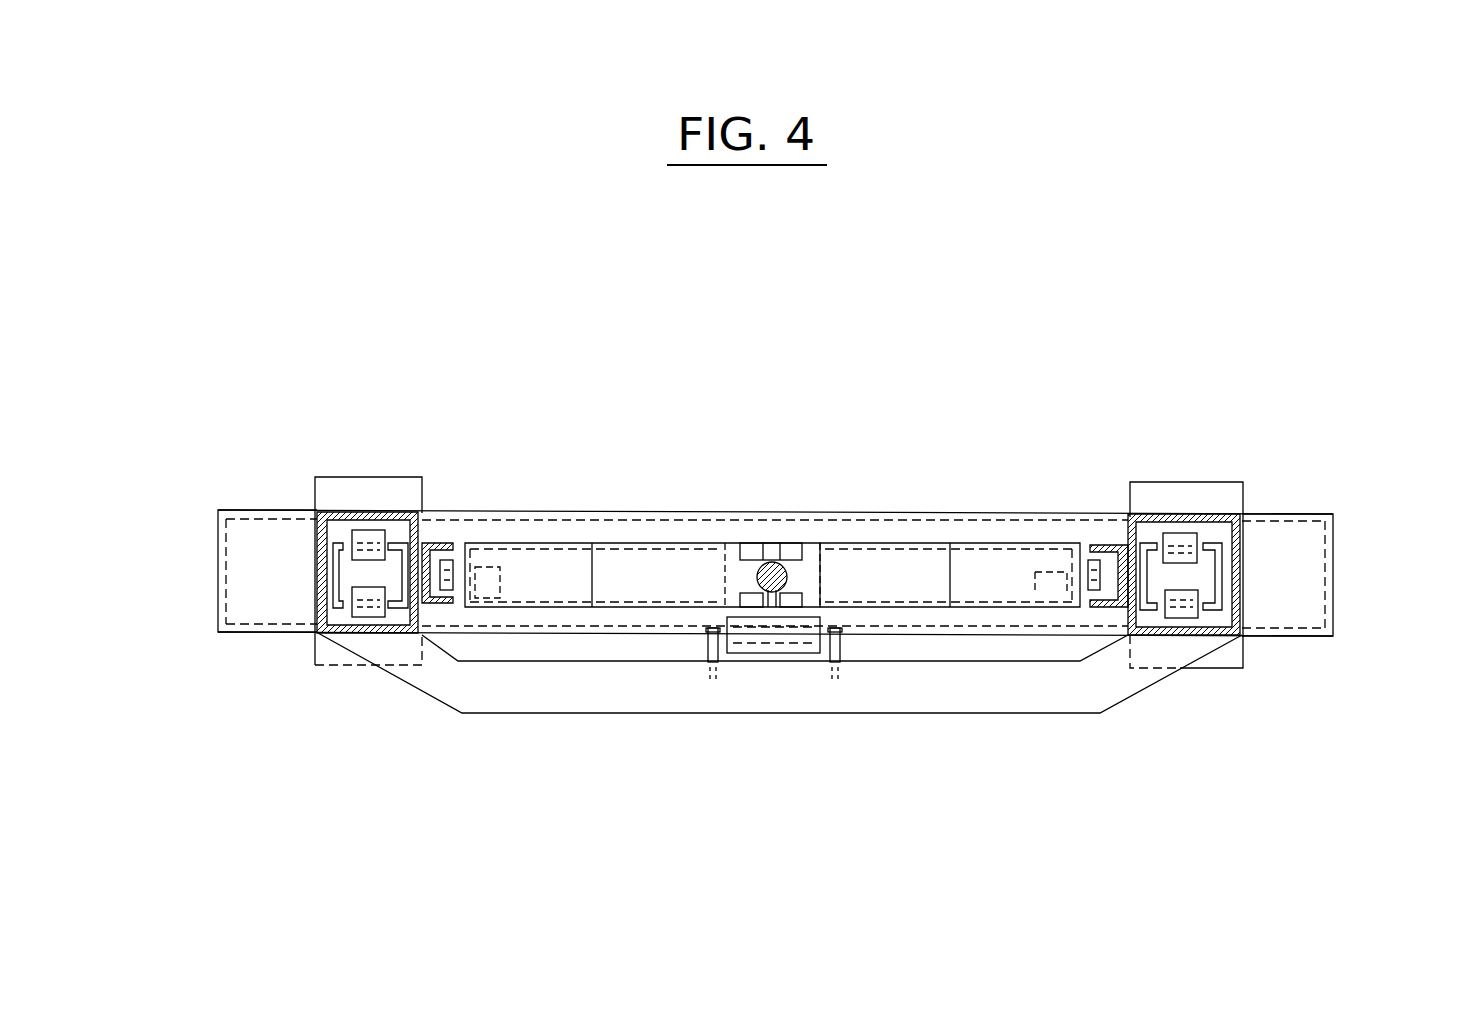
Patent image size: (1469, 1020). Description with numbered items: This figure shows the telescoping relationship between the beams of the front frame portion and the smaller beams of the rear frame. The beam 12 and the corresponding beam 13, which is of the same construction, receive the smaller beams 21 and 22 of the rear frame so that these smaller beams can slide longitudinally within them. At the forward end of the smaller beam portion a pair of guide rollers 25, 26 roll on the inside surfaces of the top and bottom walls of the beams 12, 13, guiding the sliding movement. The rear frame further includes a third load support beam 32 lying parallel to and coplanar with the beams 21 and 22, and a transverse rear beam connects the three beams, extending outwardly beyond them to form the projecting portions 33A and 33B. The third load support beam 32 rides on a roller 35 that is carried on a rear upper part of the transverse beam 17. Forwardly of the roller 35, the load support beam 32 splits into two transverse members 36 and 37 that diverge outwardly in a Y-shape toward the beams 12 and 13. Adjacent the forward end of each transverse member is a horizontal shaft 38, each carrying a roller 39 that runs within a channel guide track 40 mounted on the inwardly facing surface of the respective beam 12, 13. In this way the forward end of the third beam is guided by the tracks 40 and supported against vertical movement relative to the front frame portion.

The beam 12 is at (320, 513).
The beam 13 is at (1240, 517).
The transverse beam 17 is at (817, 716).
The beam 21 is at (402, 540).
The beam 22 is at (1160, 527).
The guide roller 25 is at (1112, 517).
The guide roller 26 is at (1180, 620).
The third load support beam 32 is at (803, 570).
The projecting portion 33A is at (260, 537).
The projecting portion 33B is at (1325, 540).
The roller 35 is at (755, 653).
The transverse member 36 is at (543, 548).
The transverse member 37 is at (980, 553).
The horizontal shaft 38 is at (480, 577).
The roller 39 is at (455, 545).
The channel guide track 40 is at (440, 603).